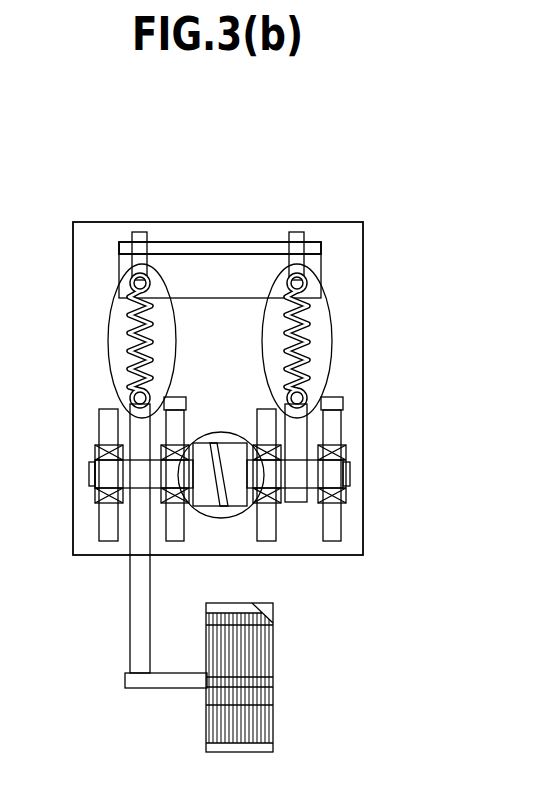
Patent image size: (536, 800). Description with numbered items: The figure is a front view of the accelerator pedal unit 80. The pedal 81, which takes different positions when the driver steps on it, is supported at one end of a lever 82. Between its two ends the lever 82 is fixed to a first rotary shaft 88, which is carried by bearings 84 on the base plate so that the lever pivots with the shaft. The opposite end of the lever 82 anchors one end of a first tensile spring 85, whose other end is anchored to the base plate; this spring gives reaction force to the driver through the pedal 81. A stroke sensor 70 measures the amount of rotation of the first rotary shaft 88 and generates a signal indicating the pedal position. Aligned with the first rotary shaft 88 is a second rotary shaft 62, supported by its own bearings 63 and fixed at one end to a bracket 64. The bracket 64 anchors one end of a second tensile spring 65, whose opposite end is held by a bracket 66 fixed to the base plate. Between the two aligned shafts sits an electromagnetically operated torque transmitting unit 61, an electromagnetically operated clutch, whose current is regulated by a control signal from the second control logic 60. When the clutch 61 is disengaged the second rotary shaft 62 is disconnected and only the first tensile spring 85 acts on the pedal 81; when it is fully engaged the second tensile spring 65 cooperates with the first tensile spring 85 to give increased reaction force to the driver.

The second control logic 60 is at (362, 197).
The electromagnetically operated torque transmitting unit 61 is at (233, 522).
The second rotary shaft 62 is at (307, 478).
The bearings 63 is at (347, 450).
The bracket 64 is at (303, 420).
The second tensile spring 65 is at (337, 362).
The bracket 66 is at (313, 263).
The stroke sensor 70 is at (177, 398).
The accelerator pedal unit 80 is at (196, 594).
The pedal 81 is at (267, 722).
The lever 82 is at (130, 592).
The bearings 84 is at (97, 452).
The first tensile spring 85 is at (102, 330).
The first rotary shaft 88 is at (127, 480).